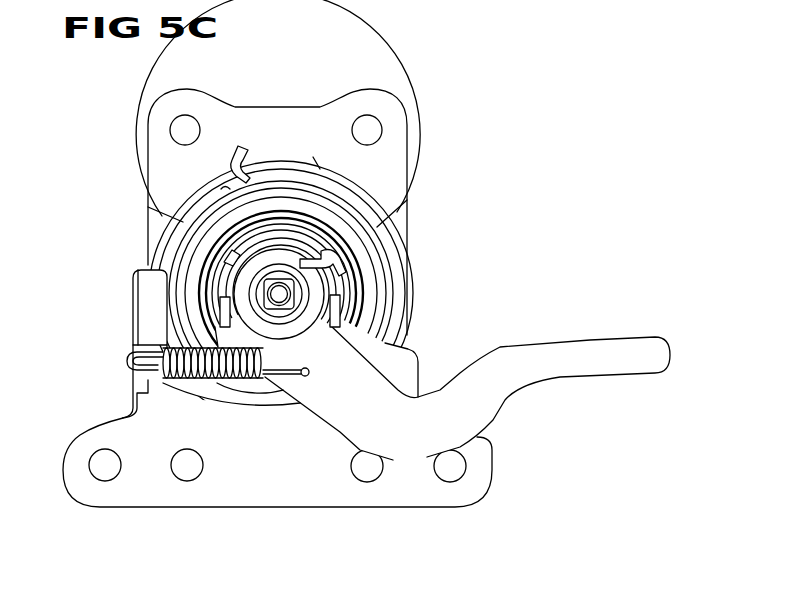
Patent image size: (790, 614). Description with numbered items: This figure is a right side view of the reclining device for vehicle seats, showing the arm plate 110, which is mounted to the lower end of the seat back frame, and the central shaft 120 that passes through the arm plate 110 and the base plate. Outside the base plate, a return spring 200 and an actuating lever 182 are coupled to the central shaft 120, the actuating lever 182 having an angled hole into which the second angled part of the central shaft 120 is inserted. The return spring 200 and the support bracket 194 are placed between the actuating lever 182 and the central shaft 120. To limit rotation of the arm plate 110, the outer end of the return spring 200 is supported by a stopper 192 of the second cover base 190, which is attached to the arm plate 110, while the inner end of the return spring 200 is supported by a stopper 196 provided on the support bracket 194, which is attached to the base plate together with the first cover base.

The arm plate 110 is at (165, 232).
The central shaft 120 is at (290, 295).
The actuating lever 182 is at (553, 358).
The second cover base 190 is at (165, 157).
The stopper 192 is at (276, 152).
The support bracket 194 is at (266, 494).
The stopper 196 is at (322, 232).
The return spring 200 is at (340, 206).